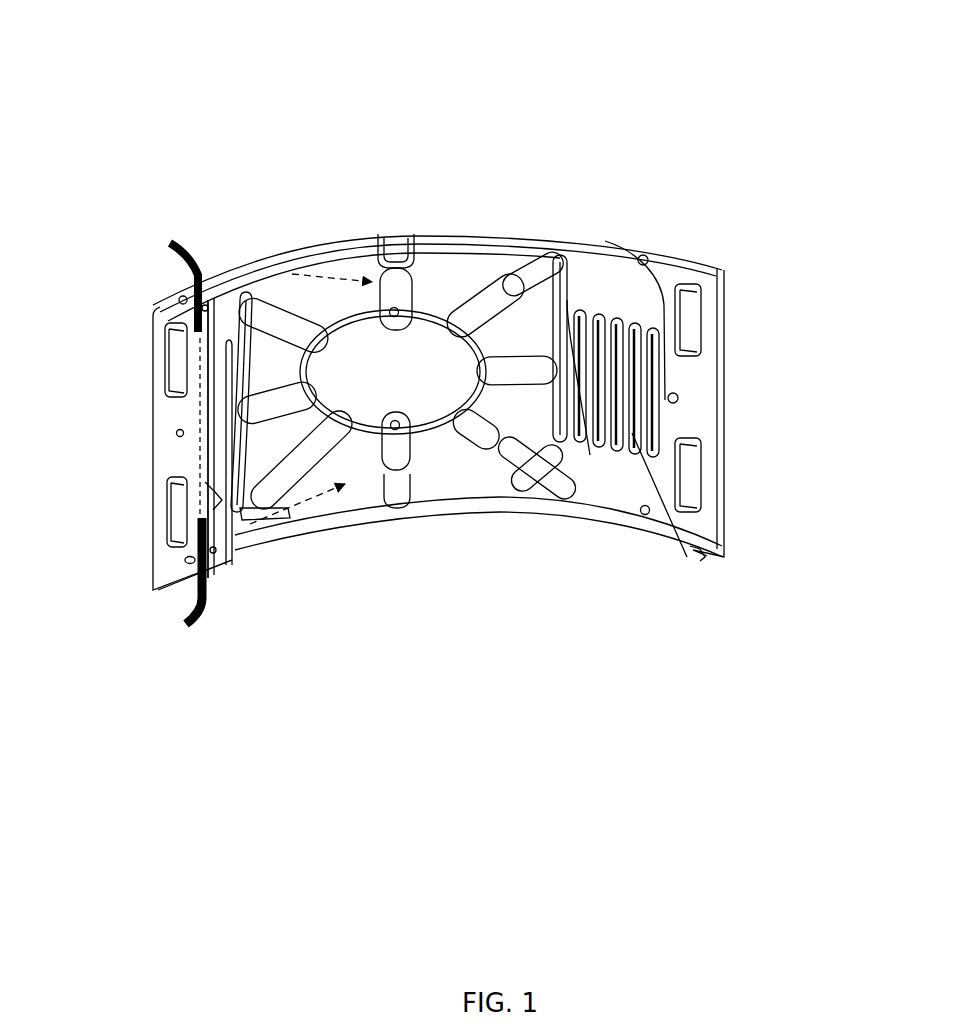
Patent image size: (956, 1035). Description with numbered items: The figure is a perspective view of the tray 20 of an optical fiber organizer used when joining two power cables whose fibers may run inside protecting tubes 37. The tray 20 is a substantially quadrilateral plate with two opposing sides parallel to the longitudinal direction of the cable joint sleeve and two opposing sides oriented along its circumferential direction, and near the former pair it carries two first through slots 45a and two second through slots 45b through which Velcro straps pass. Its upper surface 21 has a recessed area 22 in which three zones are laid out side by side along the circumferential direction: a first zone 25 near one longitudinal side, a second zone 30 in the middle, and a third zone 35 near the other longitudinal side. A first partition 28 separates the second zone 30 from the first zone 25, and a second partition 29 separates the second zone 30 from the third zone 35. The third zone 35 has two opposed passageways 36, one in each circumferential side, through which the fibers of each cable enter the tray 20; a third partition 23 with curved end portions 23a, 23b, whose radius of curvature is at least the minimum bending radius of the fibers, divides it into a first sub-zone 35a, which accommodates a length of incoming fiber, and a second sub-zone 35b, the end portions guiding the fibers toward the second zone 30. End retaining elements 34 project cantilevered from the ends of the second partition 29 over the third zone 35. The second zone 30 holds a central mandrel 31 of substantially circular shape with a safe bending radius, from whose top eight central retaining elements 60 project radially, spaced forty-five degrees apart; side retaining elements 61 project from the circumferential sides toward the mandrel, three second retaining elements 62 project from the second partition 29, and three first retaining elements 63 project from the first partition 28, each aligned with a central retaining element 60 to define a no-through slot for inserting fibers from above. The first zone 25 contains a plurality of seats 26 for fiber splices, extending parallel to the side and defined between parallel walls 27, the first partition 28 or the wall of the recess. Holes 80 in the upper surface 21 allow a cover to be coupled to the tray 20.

The tray 20 is at (502, 100).
The upper surface 21 is at (665, 270).
The recessed area 22 is at (347, 258).
The third partition 23 is at (210, 445).
The curved end portion 23a is at (213, 352).
The curved end portion 23b is at (213, 495).
The first zone 25 is at (614, 288).
The seat 26 is at (606, 452).
The parallel wall 27 is at (709, 560).
The first partition 28 is at (590, 455).
The second partition 29 is at (232, 424).
The second zone 30 is at (476, 472).
The central mandrel 31 is at (441, 300).
The end retaining element 34 is at (250, 300).
The third zone 35 is at (224, 338).
The first sub-zone 35a is at (202, 498).
The second sub-zone 35b is at (222, 410).
The passageway 36 is at (190, 282).
The protecting tube 37 is at (193, 262).
The first through slot 45a is at (692, 490).
The second through slot 45b is at (180, 362).
The central retaining element 60 is at (401, 272).
The side retaining element 61 is at (386, 490).
The second retaining element 62 is at (276, 302).
The first retaining element 63 is at (508, 282).
The hole 80 is at (678, 400).